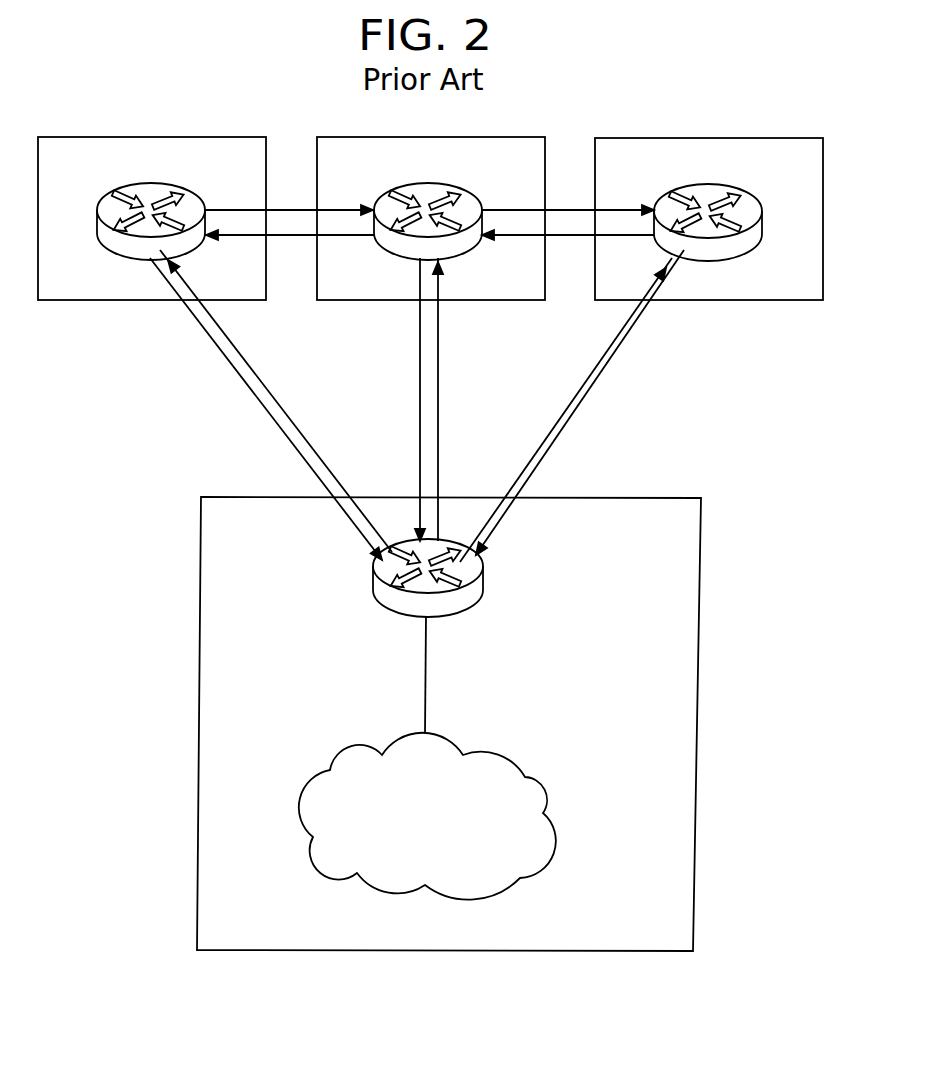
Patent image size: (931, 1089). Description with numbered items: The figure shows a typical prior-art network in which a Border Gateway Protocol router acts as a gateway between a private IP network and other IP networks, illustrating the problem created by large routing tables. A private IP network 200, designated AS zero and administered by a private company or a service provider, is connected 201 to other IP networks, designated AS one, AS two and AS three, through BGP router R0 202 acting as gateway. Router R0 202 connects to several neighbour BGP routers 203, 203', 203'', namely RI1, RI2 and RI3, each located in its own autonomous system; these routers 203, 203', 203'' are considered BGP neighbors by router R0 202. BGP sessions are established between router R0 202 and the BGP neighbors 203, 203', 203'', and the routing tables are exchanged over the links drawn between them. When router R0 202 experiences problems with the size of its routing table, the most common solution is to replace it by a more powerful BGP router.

The BGP router 203 is at (152, 206).
The BGP router 203' is at (431, 206).
The BGP router 203'' is at (709, 206).
The connection 201 is at (428, 724).
The BGP router R0 202 is at (386, 636).
The private IP network 200 is at (430, 816).